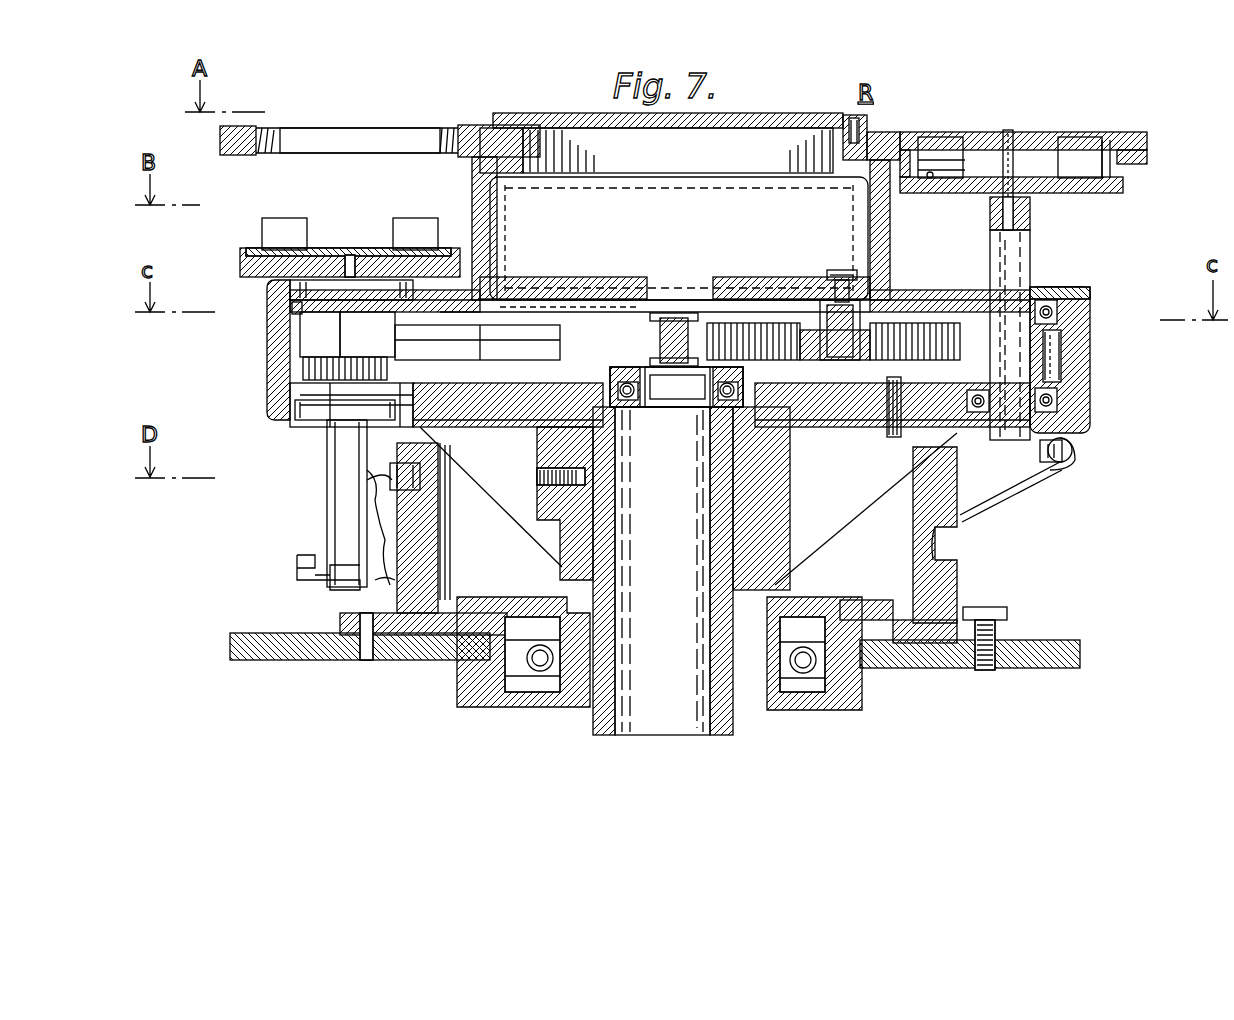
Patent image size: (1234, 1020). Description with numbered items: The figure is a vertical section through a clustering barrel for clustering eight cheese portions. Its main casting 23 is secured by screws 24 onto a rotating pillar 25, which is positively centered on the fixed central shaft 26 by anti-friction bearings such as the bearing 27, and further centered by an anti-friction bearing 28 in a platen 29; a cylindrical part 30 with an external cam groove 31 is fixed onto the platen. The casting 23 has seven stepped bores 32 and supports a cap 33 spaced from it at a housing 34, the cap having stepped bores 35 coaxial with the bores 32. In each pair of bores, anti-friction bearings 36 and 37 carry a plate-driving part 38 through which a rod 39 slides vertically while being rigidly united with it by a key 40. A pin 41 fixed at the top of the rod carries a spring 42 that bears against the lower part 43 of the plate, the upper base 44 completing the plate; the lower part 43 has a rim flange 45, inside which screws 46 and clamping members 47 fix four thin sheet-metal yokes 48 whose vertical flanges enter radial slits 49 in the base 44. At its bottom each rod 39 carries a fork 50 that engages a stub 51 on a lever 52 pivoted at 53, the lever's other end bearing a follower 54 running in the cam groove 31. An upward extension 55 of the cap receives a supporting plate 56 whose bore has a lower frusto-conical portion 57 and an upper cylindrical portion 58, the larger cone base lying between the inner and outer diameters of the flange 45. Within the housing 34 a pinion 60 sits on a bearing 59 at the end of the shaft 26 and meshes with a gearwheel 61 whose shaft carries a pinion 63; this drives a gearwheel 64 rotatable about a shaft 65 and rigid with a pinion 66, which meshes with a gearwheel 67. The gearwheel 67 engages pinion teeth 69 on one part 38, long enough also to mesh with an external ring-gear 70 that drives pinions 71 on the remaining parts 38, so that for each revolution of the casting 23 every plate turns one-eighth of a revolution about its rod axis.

The main casting 23 is at (780, 480).
The screws 24 is at (537, 476).
The rotating pillar 25 is at (600, 640).
The fixed central shaft 26 is at (662, 571).
The anti-friction bearing 27 is at (628, 400).
The anti-friction bearing 28 is at (835, 675).
The platen 29 is at (1035, 645).
The cylindrical part 30 is at (958, 587).
The cam groove 31 is at (447, 495).
The stepped bores 32 is at (327, 430).
The cap 33 is at (268, 345).
The housing 34 is at (522, 300).
The stepped bores 35 is at (292, 308).
The anti-friction bearing 36 is at (1092, 405).
The anti-friction bearing 37 is at (1058, 312).
The plate-driving part 38 is at (1062, 355).
The rod 39 is at (1092, 292).
The key 40 is at (1032, 280).
The pin 41 is at (1012, 135).
The spring 42 is at (1032, 212).
The lower part 43 is at (240, 268).
The upper base 44 is at (318, 250).
The rim flange 45 is at (240, 250).
The screws 46 is at (940, 193).
The clamping members 47 is at (912, 180).
The yokes 48 is at (1075, 150).
The radial slits 49 is at (920, 135).
The fork 50 is at (297, 560).
The stub 51 is at (1073, 450).
The lever 52 is at (440, 545).
The pivot 53 is at (372, 520).
The follower 54 is at (420, 472).
The upward extension 55 is at (474, 205).
The supporting plate 56 is at (462, 125).
The frusto-conical portion 57 is at (395, 150).
The cylindrical portion 58 is at (325, 128).
The bearing 59 is at (672, 318).
The pinion 60 is at (648, 336).
The gearwheel 61 is at (740, 322).
The pinion 63 is at (700, 365).
The gearwheel 64 is at (810, 362).
The shaft 65 is at (840, 270).
The pinion 66 is at (828, 300).
The gearwheel 67 is at (905, 300).
The pinion teeth 69 is at (1062, 368).
The external ring-gear 70 is at (413, 358).
The pinions 71 is at (350, 350).